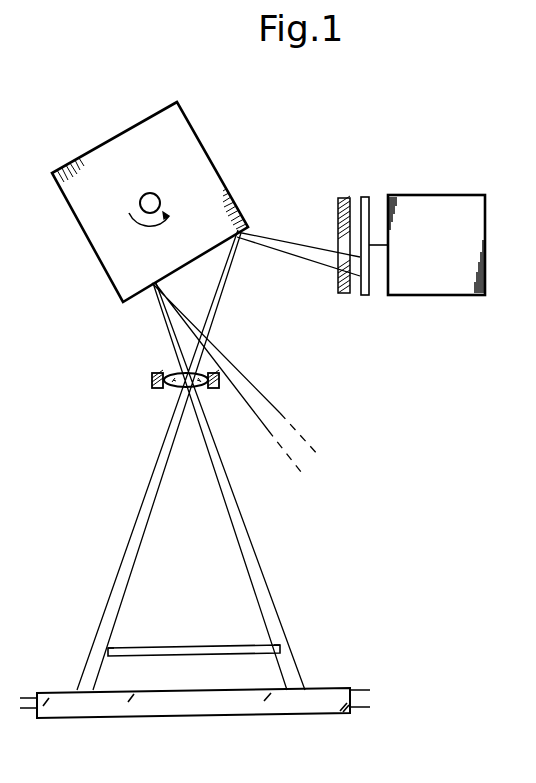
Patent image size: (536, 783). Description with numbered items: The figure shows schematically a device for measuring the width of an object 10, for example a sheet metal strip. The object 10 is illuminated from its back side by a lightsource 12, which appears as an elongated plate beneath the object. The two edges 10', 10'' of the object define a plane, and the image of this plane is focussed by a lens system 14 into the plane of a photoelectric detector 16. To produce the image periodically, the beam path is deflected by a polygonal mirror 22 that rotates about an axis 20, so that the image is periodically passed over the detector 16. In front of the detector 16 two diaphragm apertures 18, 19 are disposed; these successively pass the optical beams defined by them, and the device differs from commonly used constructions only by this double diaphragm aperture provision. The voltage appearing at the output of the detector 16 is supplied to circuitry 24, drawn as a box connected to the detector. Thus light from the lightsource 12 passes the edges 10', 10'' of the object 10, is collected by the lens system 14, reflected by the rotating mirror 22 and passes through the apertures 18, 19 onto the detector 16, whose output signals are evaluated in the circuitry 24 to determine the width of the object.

The object 10 is at (194, 623).
The edge of the object 10' is at (254, 621).
The edge of the object 10'' is at (136, 623).
The lightsource 12 is at (193, 708).
The lens system 14 is at (173, 372).
The photoelectric detector 16 is at (368, 297).
The diaphragm aperture 18 is at (342, 263).
The diaphragm aperture 19 is at (338, 230).
The axis 20 is at (147, 193).
The polygonal mirror 22 is at (202, 152).
The circuitry 24 is at (449, 261).